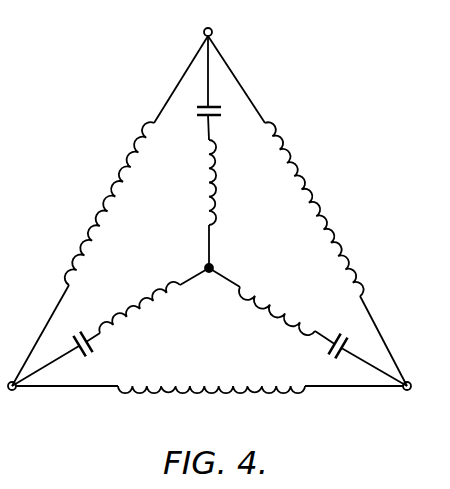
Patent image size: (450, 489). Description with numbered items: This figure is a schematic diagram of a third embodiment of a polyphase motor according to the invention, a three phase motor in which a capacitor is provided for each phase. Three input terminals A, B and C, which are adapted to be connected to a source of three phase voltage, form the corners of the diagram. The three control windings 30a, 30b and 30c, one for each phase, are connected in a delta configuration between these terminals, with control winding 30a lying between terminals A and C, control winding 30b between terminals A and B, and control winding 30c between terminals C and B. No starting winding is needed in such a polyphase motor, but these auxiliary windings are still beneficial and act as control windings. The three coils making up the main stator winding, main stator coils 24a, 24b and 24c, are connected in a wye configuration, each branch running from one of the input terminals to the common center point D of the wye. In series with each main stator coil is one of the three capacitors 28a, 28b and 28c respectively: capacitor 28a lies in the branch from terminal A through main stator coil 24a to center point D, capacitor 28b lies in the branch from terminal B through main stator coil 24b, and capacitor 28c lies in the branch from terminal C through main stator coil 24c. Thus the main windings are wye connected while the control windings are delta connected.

The input terminal A is at (214, 30).
The input terminal B is at (407, 391).
The input terminal C is at (10, 390).
The center point of the wye configuration D is at (209, 276).
The control winding 30a is at (130, 161).
The control winding 30b is at (268, 122).
The control winding 30c is at (302, 393).
The capacitor 28a is at (195, 111).
The capacitor 28b is at (348, 335).
The capacitor 28c is at (92, 365).
The main stator coil 24a is at (209, 186).
The main stator coil 24b is at (258, 310).
The main stator coil 24c is at (160, 288).